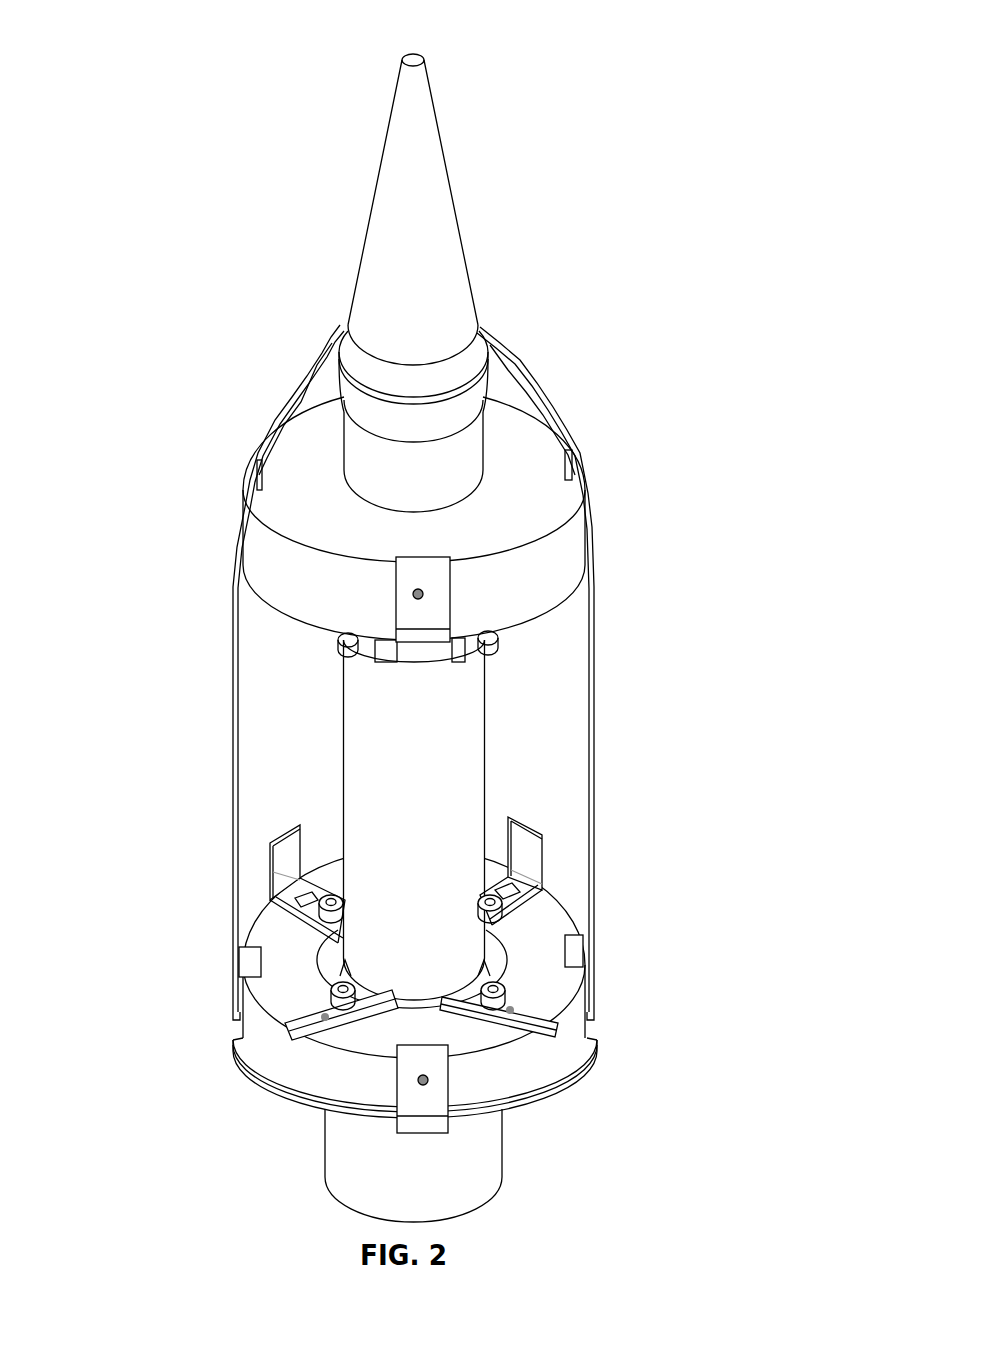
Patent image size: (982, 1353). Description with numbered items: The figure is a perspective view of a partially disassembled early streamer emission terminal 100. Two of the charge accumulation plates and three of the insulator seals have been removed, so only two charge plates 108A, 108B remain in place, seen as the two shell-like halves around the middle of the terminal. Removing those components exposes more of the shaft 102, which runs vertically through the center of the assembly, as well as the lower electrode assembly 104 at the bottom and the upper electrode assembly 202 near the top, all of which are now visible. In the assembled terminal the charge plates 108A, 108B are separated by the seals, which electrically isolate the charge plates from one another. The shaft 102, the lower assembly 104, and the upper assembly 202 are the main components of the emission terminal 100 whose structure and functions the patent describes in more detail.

The emission terminal 100 is at (524, 123).
The shaft 102 is at (403, 695).
The lower electrode assembly 104 is at (468, 1180).
The charge accumulation plate 108A is at (313, 360).
The charge accumulation plate 108B is at (520, 360).
The upper electrode assembly 202 is at (547, 553).